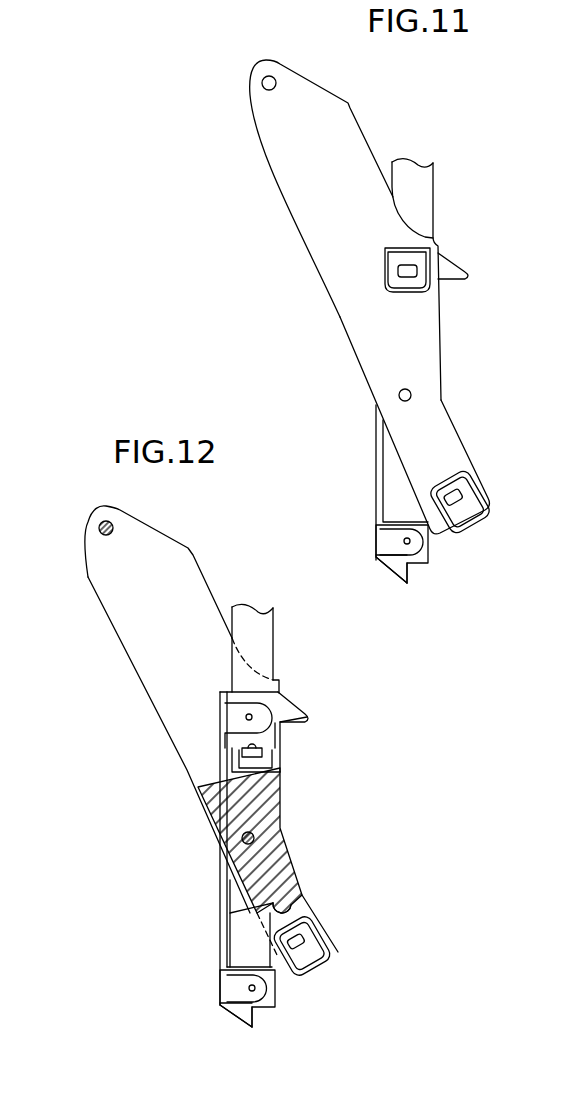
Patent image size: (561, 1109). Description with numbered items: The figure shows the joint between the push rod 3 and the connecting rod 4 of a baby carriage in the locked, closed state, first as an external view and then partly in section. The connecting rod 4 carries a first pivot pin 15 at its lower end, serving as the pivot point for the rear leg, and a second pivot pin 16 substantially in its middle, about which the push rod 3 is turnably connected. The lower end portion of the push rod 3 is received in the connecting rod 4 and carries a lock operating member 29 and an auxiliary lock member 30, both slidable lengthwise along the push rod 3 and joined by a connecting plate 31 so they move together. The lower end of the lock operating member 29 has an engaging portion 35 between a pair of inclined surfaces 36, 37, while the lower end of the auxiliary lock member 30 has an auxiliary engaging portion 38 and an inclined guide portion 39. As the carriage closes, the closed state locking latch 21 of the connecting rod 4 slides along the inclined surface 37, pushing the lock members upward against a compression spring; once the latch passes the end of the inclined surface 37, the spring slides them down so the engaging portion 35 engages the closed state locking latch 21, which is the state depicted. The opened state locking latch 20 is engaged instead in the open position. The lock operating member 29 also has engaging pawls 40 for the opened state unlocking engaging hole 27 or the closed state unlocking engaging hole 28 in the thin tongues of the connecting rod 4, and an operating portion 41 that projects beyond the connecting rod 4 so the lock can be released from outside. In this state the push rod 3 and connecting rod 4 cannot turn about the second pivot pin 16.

In FIG. 11, the push rod 3 is at (451, 187).
In FIG. 12, the push rod 3 is at (289, 642).
In FIG. 11, the connecting rod 4 is at (290, 246).
In FIG. 12, the connecting rod 4 is at (136, 706).
In FIG. 11, the first pivot pin 15 is at (262, 86).
In FIG. 12, the first pivot pin 15 is at (100, 534).
In FIG. 11, the second pivot pin 16 is at (412, 391).
In FIG. 12, the second pivot pin 16 is at (254, 838).
In FIG. 12, the opened state locking latch 20 is at (289, 906).
In FIG. 12, the closed state locking latch 21 is at (263, 758).
In FIG. 11, the opened state unlocking engaging hole 27 is at (458, 500).
In FIG. 12, the opened state unlocking engaging hole 27 is at (299, 946).
In FIG. 11, the closed state unlocking engaging hole 28 is at (397, 270).
In FIG. 12, the lock operating member 29 is at (224, 694).
In FIG. 11, the auxiliary lock member 30 is at (425, 553).
In FIG. 12, the auxiliary lock member 30 is at (271, 1003).
In FIG. 11, the connecting plate 31 is at (377, 463).
In FIG. 12, the connecting plate 31 is at (220, 928).
In FIG. 12, the engaging portion 35 is at (233, 752).
In FIG. 12, the inclined surface 36 is at (280, 770).
In FIG. 12, the inclined surface 37 is at (228, 762).
In FIG. 11, the auxiliary engaging portion 38 is at (410, 581).
In FIG. 12, the auxiliary engaging portion 38 is at (256, 1025).
In FIG. 11, the inclined guide portion 39 is at (389, 578).
In FIG. 12, the inclined guide portion 39 is at (234, 1022).
In FIG. 12, the engaging pawl 40 is at (257, 744).
In FIG. 11, the operating portion 41 is at (460, 268).
In FIG. 12, the operating portion 41 is at (300, 715).